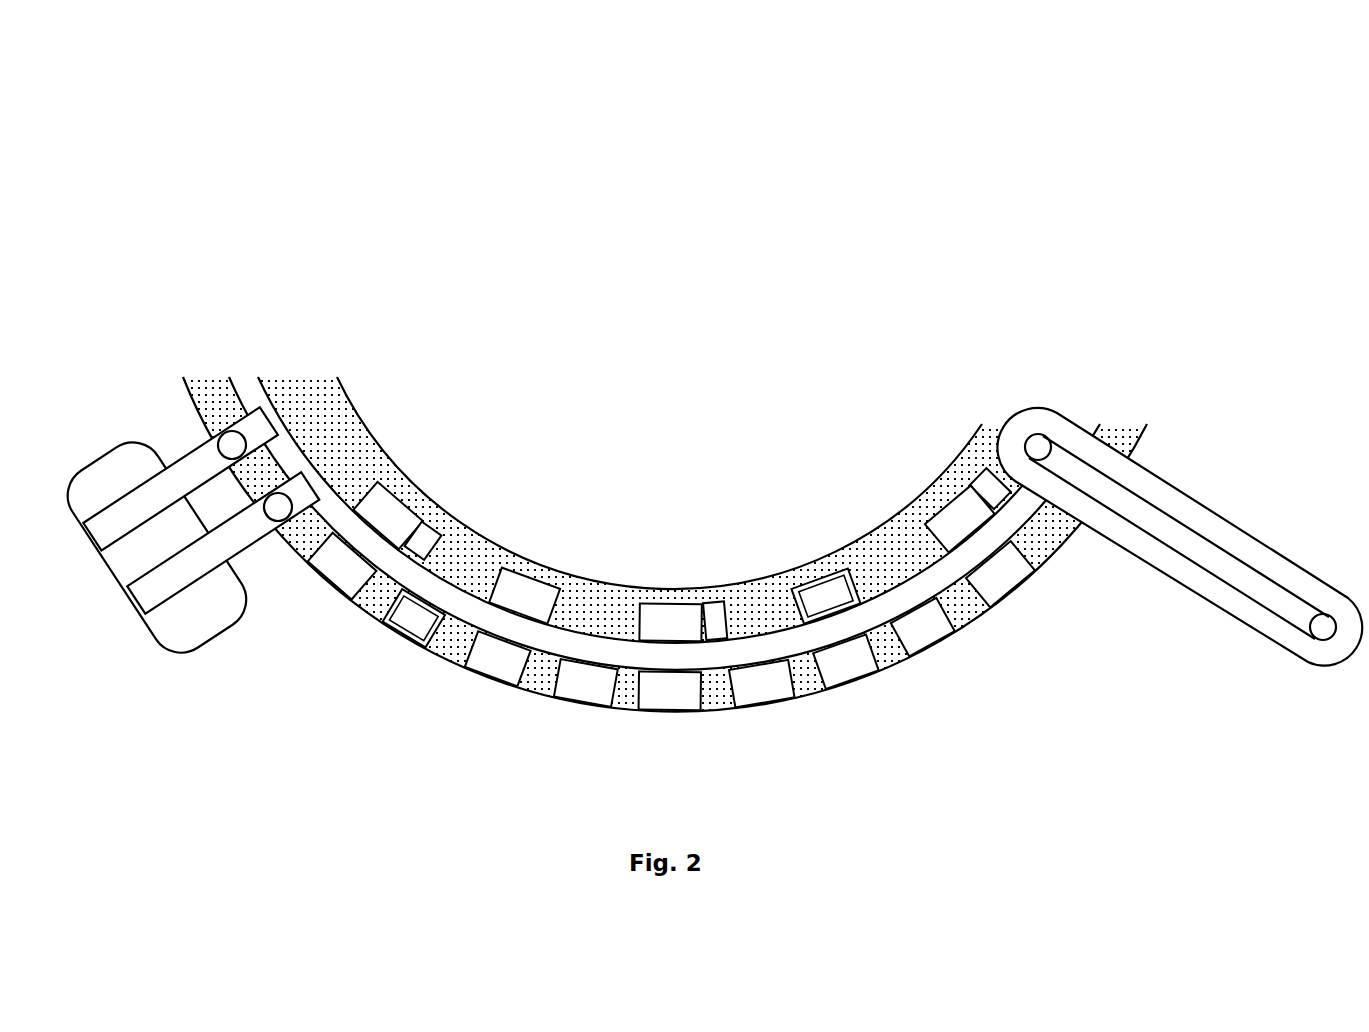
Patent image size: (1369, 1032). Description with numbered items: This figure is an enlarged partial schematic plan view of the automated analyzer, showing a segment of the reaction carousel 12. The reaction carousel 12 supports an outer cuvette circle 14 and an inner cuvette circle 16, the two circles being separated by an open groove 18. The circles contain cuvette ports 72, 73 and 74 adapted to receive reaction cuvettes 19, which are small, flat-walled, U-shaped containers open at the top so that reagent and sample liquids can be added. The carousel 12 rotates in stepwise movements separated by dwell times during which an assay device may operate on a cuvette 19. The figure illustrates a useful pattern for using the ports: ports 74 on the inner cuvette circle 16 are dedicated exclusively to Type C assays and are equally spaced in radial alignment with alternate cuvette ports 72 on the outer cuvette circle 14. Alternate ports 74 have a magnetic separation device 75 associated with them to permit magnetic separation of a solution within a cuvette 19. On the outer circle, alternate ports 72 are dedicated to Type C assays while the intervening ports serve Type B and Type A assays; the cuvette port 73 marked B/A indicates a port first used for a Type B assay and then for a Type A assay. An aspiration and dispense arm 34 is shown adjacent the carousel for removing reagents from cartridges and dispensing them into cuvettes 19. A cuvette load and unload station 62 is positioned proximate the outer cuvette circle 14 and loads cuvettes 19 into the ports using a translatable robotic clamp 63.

The reaction carousel 12 is at (665, 437).
The outer cuvette circle 14 is at (985, 475).
The inner cuvette circle 16 is at (484, 548).
The open groove 18 is at (580, 645).
The reaction cuvette 19 is at (819, 580).
The aspiration and dispense arm 34 is at (1210, 605).
The cuvette load and unload station 62 is at (142, 620).
The translatable robotic clamp 63 is at (280, 510).
The cuvette port 72 is at (881, 687).
The cuvette port 73 is at (784, 719).
The cuvette port 74 is at (645, 641).
The magnetic separation device 75 is at (718, 661).